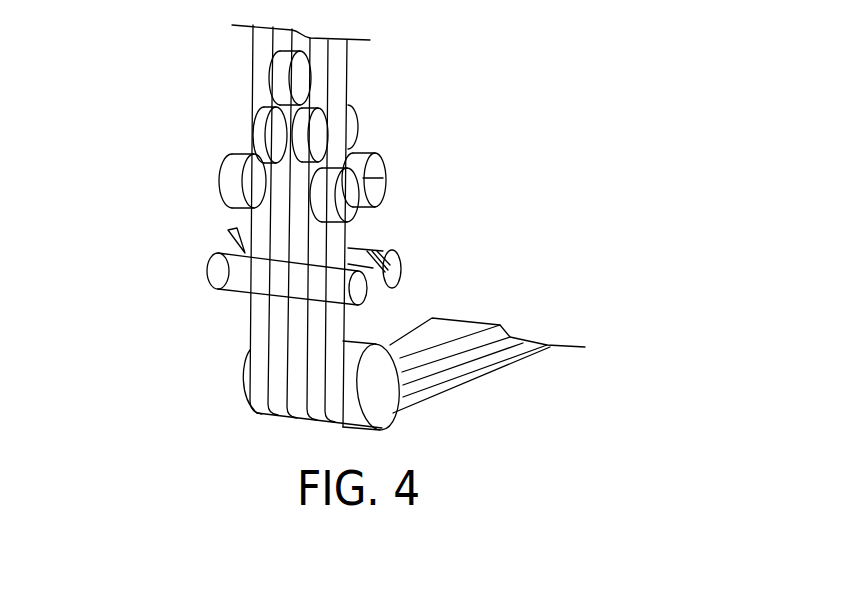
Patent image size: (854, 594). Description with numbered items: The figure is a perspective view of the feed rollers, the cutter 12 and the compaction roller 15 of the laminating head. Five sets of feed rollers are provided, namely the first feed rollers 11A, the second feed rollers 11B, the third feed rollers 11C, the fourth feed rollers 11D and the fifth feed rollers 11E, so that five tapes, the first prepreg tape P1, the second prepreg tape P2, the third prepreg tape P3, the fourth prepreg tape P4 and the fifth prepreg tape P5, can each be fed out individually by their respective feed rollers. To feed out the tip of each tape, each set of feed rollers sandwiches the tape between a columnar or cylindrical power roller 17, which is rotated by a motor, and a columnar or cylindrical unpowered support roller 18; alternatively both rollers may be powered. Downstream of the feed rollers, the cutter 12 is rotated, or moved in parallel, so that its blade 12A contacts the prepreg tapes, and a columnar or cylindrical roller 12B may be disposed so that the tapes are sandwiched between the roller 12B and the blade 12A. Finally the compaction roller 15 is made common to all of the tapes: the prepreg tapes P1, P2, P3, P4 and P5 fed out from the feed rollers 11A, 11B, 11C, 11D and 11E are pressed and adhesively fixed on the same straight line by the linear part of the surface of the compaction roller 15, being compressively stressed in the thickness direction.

The first feed rollers 11A is at (228, 183).
The second feed rollers 11B is at (282, 134).
The third feed rollers 11C is at (275, 78).
The fourth feed rollers 11D is at (300, 136).
The fifth feed rollers 11E is at (322, 196).
The cutter 12 is at (296, 259).
The blade 12A is at (402, 270).
The roller 12B is at (227, 277).
The compaction roller 15 is at (393, 417).
The power roller 17 is at (385, 165).
The support roller 18 is at (385, 187).
The first prepreg tape P1 is at (258, 337).
The second prepreg tape P2 is at (277, 352).
The third prepreg tape P3 is at (297, 367).
The fourth prepreg tape P4 is at (300, 387).
The fifth prepreg tape P5 is at (257, 415).